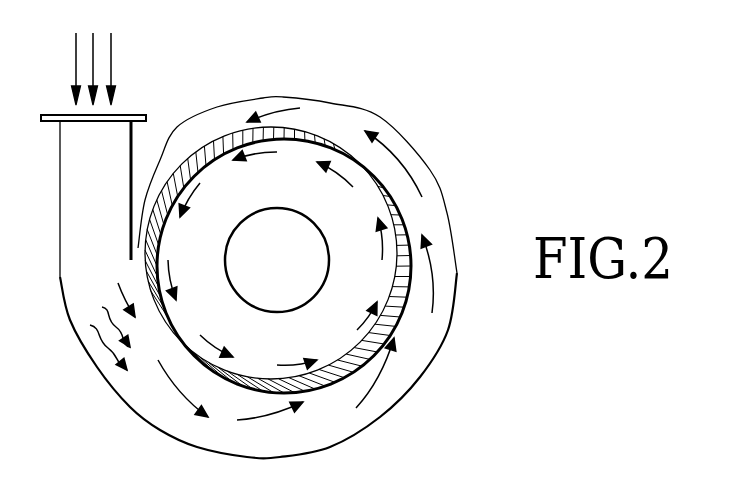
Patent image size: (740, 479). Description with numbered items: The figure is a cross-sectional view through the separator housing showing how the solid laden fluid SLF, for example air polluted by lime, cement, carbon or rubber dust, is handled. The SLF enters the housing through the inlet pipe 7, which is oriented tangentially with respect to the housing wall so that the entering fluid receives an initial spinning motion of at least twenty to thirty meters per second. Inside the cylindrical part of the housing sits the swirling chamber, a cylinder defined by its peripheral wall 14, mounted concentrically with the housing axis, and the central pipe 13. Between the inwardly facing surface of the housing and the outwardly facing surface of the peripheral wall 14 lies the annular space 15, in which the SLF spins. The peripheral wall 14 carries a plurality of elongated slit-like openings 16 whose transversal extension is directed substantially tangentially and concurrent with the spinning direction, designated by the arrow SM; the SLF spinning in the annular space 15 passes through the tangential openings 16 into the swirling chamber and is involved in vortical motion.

The inlet pipe 7 is at (136, 114).
The central pipe 13 is at (296, 207).
The peripheral wall 14 is at (381, 351).
The annular space 15 is at (190, 427).
The elongated slit-like openings 16 is at (402, 212).
The solid laden fluid SLF is at (94, 55).
The direction of spinning motion SM is at (436, 292).